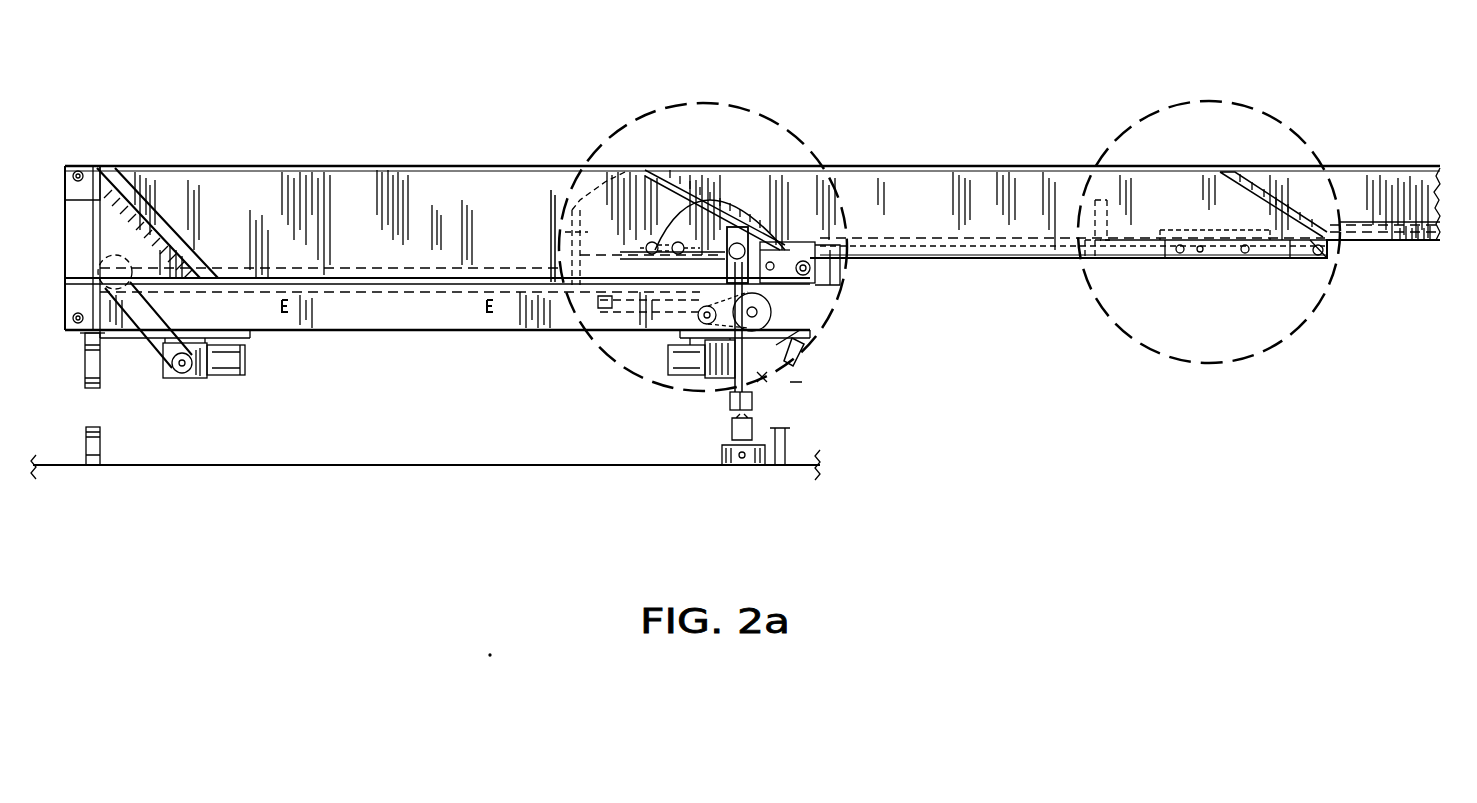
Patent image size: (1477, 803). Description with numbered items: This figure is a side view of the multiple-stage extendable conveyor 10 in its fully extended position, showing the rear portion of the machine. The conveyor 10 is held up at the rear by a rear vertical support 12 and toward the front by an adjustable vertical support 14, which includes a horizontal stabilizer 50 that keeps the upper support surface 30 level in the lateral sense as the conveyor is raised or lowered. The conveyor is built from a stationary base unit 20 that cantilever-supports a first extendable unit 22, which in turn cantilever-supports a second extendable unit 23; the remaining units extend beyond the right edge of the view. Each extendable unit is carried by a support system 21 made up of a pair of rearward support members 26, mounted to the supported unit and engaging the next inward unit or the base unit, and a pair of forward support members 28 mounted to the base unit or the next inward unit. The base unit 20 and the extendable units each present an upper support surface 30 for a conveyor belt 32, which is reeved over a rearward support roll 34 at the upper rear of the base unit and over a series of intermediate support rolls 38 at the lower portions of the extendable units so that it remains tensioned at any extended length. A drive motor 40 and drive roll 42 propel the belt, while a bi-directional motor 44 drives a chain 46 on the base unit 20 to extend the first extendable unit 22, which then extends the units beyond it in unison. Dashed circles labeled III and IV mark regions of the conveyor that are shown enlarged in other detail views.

The multiple-stage extendable conveyor 10 is at (788, 167).
The rear vertical support 12 is at (100, 360).
The adjustable vertical support 14 is at (730, 402).
The stationary base unit 20 is at (434, 330).
The support system 21 is at (812, 300).
The first extendable unit 22 is at (895, 266).
The second extendable unit 23 is at (1397, 246).
The rearward support members 26 is at (553, 230).
The forward support members 28 is at (810, 262).
The upper support surface 30 is at (245, 165).
The conveyor belt 32 is at (1266, 170).
The rearward support roll 34 is at (78, 165).
The intermediate support rolls 38 is at (745, 230).
The drive motor 40 is at (753, 370).
The drive roll 42 is at (800, 358).
The bi-directional motor 44 is at (228, 378).
The chain 46 is at (372, 268).
The horizontal stabilizer 50 is at (808, 345).
The detail view III is at (667, 103).
The detail view IV is at (1172, 103).